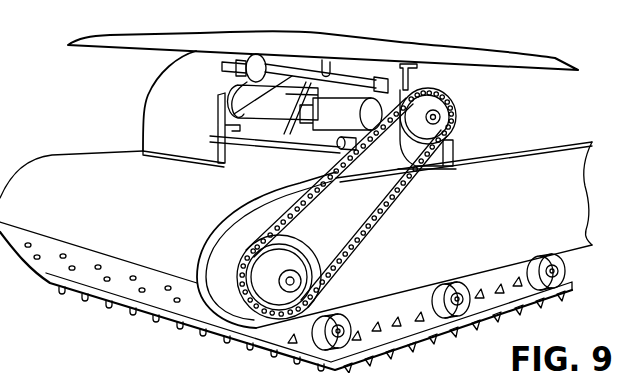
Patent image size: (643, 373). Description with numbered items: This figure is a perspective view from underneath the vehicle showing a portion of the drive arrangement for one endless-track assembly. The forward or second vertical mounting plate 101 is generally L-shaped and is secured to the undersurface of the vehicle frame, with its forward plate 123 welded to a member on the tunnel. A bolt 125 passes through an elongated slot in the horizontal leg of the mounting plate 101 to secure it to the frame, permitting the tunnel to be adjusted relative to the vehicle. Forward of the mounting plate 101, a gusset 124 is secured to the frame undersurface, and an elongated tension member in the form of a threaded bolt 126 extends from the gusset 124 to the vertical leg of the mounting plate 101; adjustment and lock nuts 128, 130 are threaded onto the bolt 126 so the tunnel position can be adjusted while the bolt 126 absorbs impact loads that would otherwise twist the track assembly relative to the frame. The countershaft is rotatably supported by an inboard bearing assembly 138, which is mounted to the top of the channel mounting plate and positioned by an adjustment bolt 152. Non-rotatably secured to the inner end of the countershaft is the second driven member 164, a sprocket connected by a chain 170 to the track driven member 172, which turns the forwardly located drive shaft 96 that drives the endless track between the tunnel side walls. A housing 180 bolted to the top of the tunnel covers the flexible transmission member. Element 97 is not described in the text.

The second vertical mounting plate 101 is at (428, 55).
The housing 180 is at (170, 79).
The adjustment and lock nut 128 is at (237, 62).
The gusset 124 is at (262, 62).
The bolt 125 is at (382, 60).
The adjustment and lock nut 130 is at (408, 63).
The inboard bearing assembly 138 is at (406, 86).
The second driven member 164 is at (453, 110).
The threaded bolt 126 is at (236, 117).
The forward plate 123 is at (224, 164).
The adjustment bolt 152 is at (328, 150).
The chain 170 is at (398, 207).
The track driven member 172 is at (260, 243).
The track sprocket 97 is at (295, 262).
The drive shaft 96 is at (281, 277).